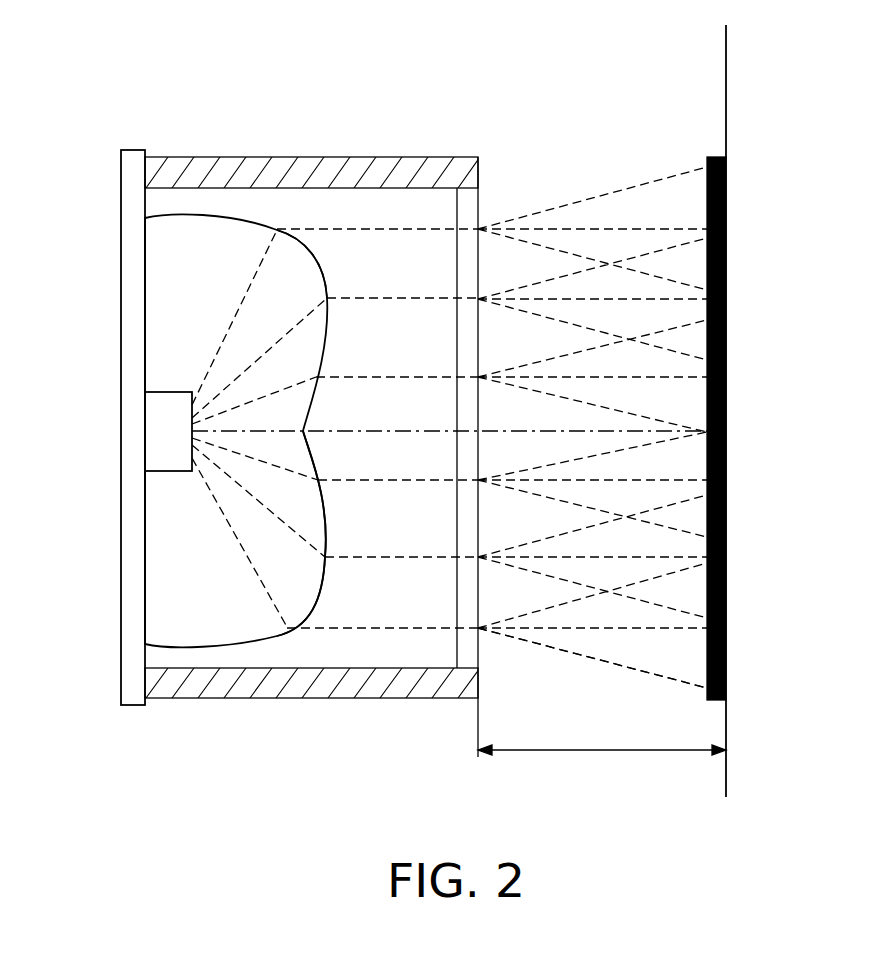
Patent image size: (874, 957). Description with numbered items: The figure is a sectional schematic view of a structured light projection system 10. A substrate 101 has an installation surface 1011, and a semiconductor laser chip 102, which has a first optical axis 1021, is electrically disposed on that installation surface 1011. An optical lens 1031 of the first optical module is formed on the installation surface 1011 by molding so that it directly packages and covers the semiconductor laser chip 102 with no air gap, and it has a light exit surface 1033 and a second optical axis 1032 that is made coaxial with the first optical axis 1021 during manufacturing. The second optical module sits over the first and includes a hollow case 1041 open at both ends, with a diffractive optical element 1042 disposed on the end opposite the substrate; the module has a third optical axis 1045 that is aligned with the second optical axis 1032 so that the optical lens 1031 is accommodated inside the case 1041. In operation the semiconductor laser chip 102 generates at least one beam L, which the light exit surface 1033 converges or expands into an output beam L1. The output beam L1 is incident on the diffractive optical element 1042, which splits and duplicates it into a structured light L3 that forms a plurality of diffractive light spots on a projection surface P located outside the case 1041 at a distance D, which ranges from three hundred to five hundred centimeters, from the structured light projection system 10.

The structured light projection system 10 is at (518, 810).
The substrate 101 is at (133, 450).
The installation surface 1011 is at (147, 587).
The semiconductor laser chip 102 is at (170, 402).
The first optical axis 1021 is at (258, 433).
The optical lens 1031 is at (187, 250).
The second optical axis 1032 is at (380, 432).
The light exit surface 1033 is at (315, 256).
The case 1041 is at (442, 177).
The diffractive optical element 1042 is at (468, 208).
The third optical axis 1045 is at (600, 432).
The beam L is at (258, 262).
The output beam L1 is at (350, 227).
The structured light L3 is at (636, 672).
The projection surface P is at (725, 130).
The distance D is at (602, 727).